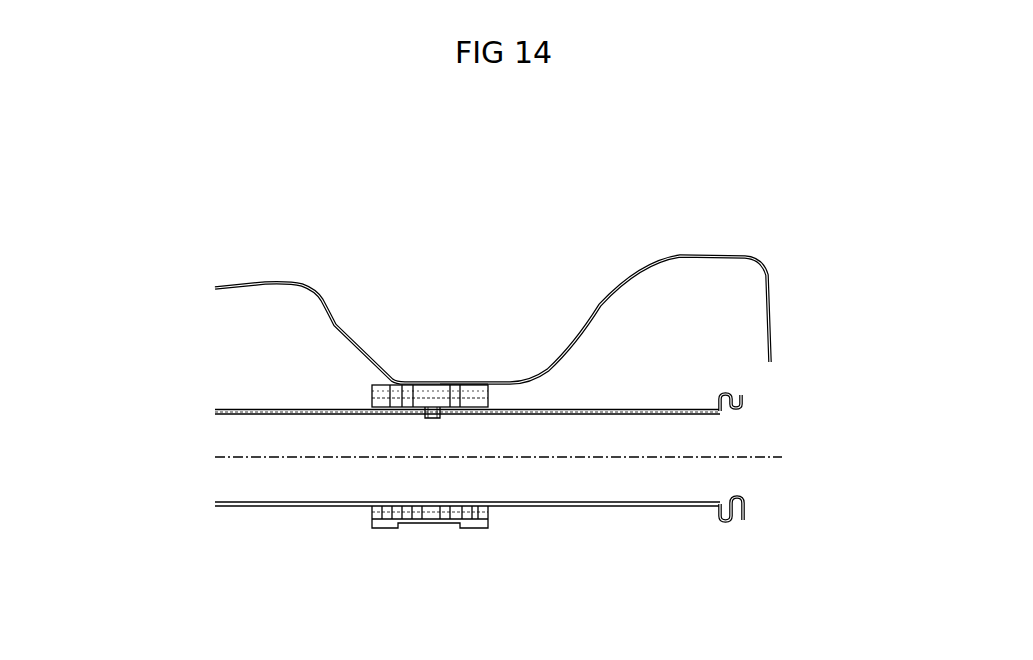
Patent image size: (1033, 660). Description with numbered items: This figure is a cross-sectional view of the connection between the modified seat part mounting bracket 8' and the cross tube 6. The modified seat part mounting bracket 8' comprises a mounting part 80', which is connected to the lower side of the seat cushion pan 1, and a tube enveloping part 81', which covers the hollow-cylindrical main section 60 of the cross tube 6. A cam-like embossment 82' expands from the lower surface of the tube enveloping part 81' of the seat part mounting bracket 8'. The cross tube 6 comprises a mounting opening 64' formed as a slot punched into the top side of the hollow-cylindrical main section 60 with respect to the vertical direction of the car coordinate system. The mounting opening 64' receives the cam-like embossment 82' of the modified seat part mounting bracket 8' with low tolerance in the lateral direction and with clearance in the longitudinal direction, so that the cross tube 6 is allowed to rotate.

The seat cushion pan 1 is at (697, 252).
The cross tube 6 is at (662, 507).
The modified seat part mounting bracket 8' is at (489, 283).
The hollow-cylindrical main section 60 is at (612, 410).
The mounting opening 64' is at (520, 505).
The mounting part 80' is at (287, 349).
The tube enveloping part 81' is at (419, 577).
The cam-like embossment 82' is at (304, 493).